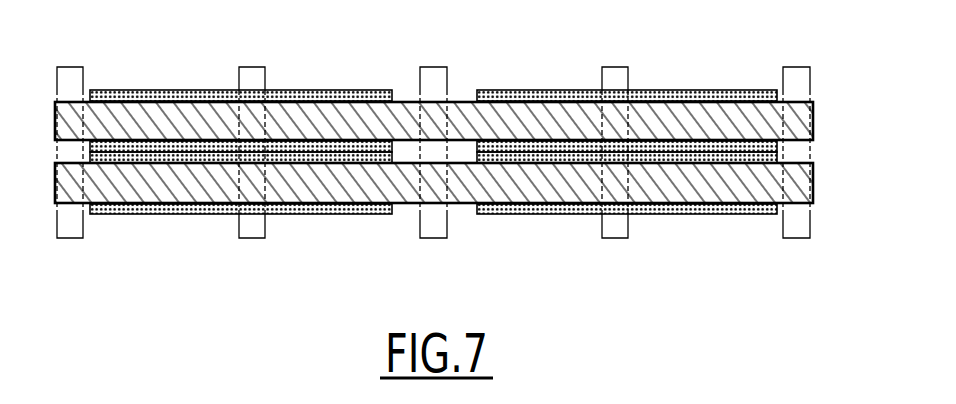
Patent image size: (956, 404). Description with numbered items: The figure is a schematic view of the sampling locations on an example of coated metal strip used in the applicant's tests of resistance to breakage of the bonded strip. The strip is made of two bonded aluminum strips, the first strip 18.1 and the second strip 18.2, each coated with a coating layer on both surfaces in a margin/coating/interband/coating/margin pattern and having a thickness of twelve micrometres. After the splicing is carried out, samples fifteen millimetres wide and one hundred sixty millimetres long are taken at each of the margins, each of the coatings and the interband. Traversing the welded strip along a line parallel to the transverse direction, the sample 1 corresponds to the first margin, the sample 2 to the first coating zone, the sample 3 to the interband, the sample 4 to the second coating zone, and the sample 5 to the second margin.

The first strip 18.1 is at (678, 123).
The second strip 18.2 is at (692, 180).
The sample 1 is at (70, 174).
The sample 2 is at (252, 174).
The sample 3 is at (433, 174).
The sample 4 is at (615, 174).
The sample 5 is at (796, 174).